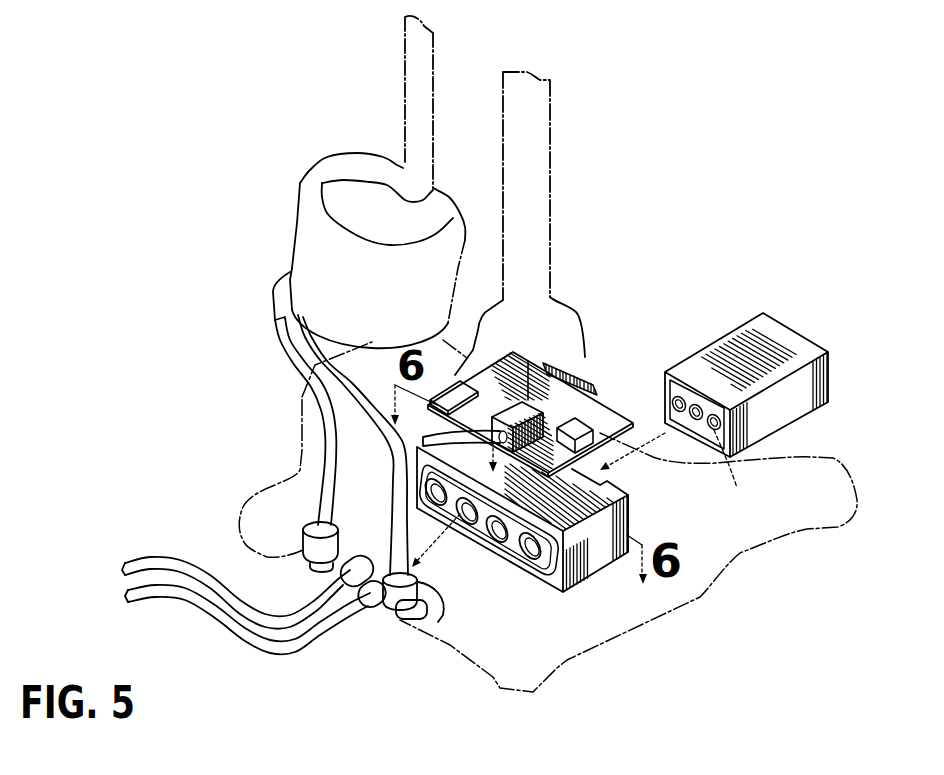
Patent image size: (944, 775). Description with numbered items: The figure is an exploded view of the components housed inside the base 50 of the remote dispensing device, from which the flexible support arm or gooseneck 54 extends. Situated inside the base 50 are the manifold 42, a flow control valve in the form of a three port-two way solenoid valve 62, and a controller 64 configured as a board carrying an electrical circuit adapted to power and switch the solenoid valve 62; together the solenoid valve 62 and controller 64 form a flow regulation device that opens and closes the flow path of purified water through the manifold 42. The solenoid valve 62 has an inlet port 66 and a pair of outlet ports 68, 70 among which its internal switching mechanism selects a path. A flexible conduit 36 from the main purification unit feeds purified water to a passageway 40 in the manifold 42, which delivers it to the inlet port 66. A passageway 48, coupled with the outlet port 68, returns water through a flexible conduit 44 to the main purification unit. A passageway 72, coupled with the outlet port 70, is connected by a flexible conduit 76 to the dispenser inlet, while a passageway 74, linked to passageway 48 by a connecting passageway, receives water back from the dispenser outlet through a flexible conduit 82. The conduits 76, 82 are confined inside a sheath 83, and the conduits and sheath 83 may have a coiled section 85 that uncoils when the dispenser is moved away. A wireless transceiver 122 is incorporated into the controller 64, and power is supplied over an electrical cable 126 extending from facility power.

The flexible water line or conduit 36 is at (213, 636).
The passageway 40 is at (530, 540).
The manifold 42 is at (636, 508).
The flexible water line or conduit 44 is at (158, 560).
The passageway 48 is at (460, 514).
The base 50 is at (703, 598).
The flexible support arm or gooseneck 54 is at (550, 167).
The three port-two way solenoid valve 62 is at (757, 398).
The controller 64 is at (584, 475).
The inlet port 66 is at (697, 400).
The outlet port 68 is at (675, 406).
The outlet port 70 is at (592, 448).
The passageway 72 is at (528, 560).
The passageway 74 is at (435, 493).
The flexible conduit 76 is at (312, 365).
The flexible conduit 82 is at (322, 432).
The sheath 83 is at (405, 65).
The coiled section 85 is at (293, 237).
The wireless transceiver 122 is at (577, 418).
The electrical cable 126 is at (468, 449).